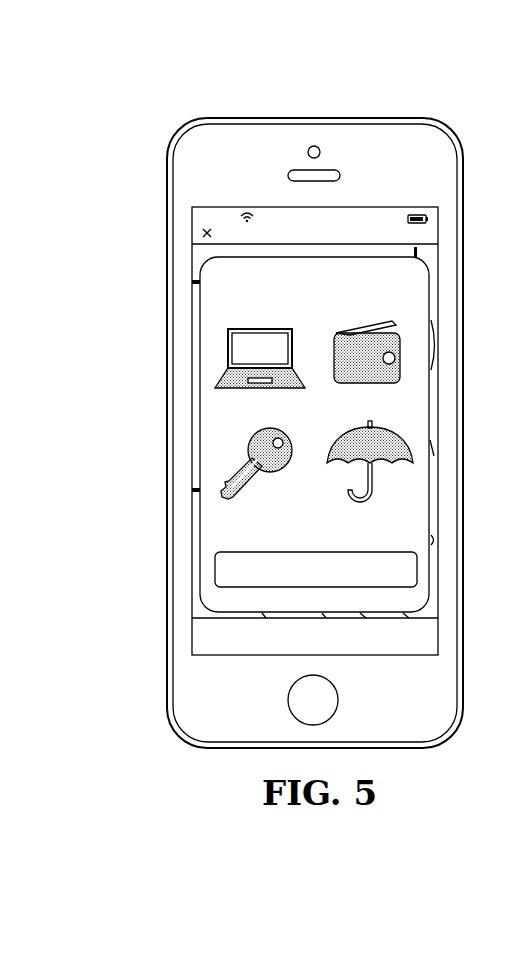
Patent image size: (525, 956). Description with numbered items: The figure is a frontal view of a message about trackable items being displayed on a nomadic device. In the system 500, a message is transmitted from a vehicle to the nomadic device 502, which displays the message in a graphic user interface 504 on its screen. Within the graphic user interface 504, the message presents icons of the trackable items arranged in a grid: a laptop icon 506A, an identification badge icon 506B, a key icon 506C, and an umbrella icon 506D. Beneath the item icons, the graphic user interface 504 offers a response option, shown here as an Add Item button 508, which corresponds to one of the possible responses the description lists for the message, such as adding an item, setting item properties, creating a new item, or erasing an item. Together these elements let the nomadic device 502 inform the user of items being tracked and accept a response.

The system 500 is at (349, 94).
The nomadic device 502 is at (390, 748).
The graphic user interface 504 is at (200, 295).
The laptop icon 506A is at (228, 350).
The identification badge icon 506B is at (400, 358).
The key icon 506C is at (223, 488).
The umbrella icon 506D is at (403, 443).
The add item button 508 is at (215, 572).